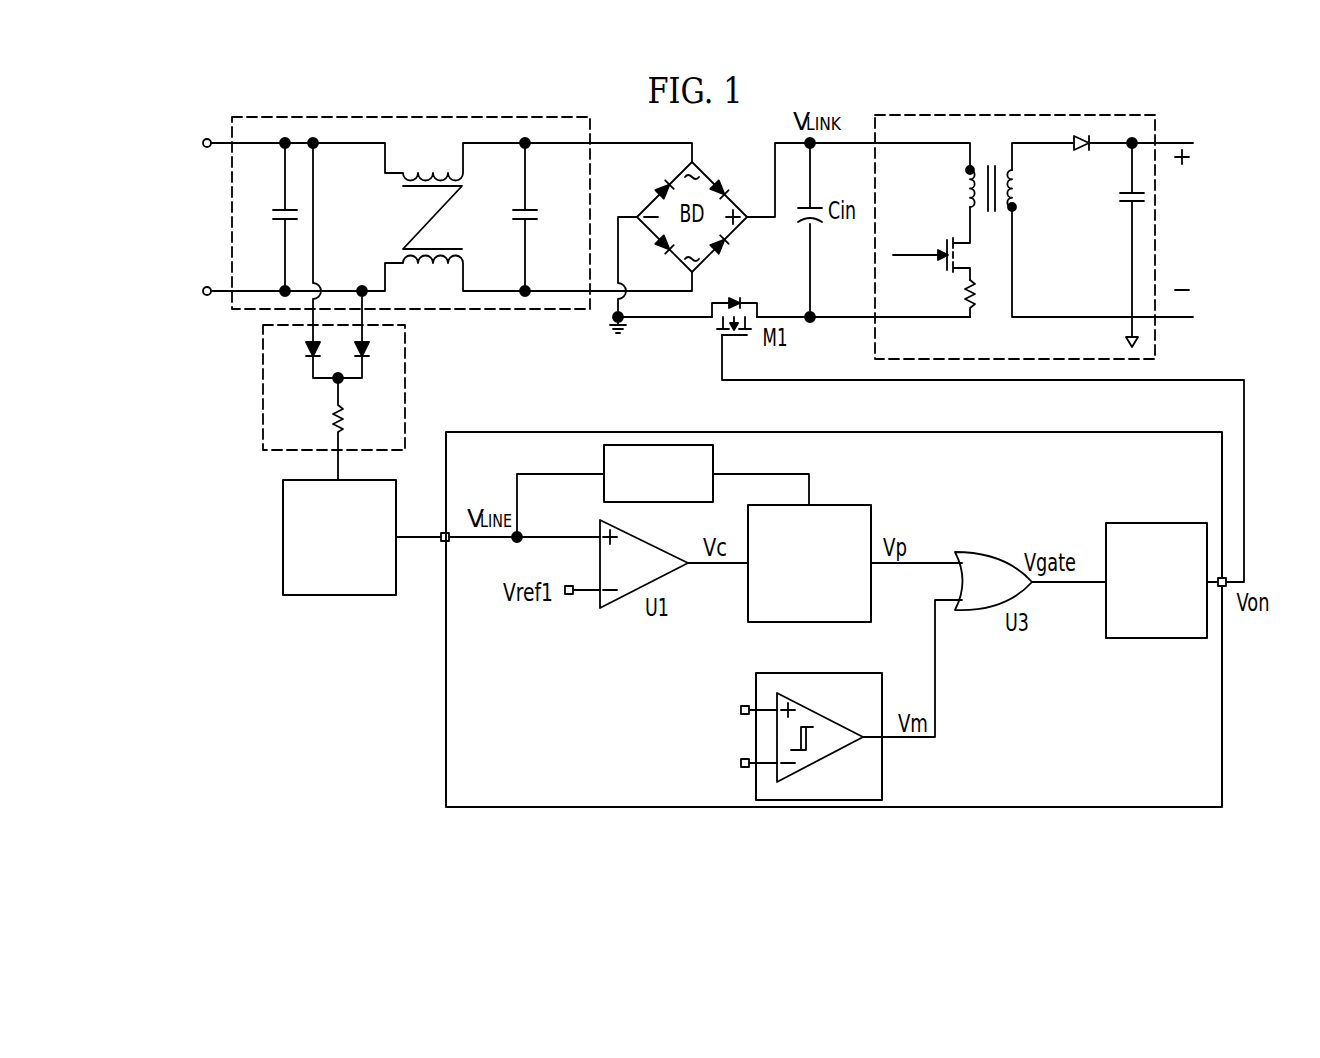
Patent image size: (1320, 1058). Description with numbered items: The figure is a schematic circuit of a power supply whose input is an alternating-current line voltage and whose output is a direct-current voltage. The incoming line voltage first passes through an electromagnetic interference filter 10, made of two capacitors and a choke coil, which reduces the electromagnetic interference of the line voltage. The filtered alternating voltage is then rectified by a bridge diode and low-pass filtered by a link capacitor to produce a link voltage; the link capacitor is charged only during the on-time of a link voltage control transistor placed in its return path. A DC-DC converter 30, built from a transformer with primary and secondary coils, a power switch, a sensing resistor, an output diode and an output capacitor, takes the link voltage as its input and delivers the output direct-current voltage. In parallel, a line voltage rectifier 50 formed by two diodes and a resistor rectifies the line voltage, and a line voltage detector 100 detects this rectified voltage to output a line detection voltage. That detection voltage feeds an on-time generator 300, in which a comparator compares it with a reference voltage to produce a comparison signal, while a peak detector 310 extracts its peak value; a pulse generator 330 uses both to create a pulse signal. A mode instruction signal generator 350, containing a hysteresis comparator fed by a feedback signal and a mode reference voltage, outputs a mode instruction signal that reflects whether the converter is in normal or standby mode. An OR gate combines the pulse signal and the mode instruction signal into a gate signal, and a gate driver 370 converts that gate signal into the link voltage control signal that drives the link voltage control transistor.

The electromagnetic interference filter 10 is at (410, 117).
The DC-DC converter 30 is at (1013, 115).
The line voltage rectifier 50 is at (263, 387).
The line voltage detector 100 is at (340, 597).
The on-time generator 300 is at (503, 432).
The peak detector 310 is at (657, 445).
The pulse generator 330 is at (847, 505).
The mode instruction signal generator 350 is at (883, 776).
The gate driver 370 is at (1158, 639).